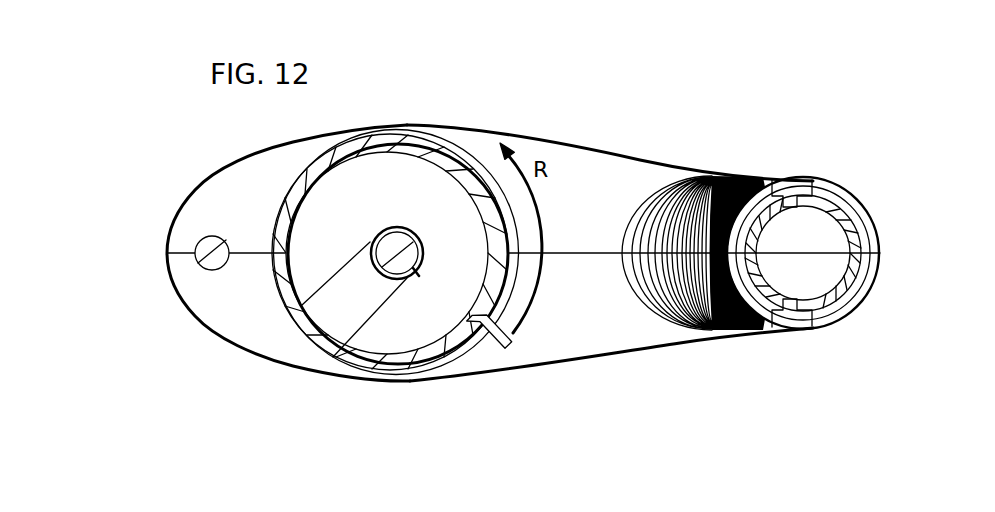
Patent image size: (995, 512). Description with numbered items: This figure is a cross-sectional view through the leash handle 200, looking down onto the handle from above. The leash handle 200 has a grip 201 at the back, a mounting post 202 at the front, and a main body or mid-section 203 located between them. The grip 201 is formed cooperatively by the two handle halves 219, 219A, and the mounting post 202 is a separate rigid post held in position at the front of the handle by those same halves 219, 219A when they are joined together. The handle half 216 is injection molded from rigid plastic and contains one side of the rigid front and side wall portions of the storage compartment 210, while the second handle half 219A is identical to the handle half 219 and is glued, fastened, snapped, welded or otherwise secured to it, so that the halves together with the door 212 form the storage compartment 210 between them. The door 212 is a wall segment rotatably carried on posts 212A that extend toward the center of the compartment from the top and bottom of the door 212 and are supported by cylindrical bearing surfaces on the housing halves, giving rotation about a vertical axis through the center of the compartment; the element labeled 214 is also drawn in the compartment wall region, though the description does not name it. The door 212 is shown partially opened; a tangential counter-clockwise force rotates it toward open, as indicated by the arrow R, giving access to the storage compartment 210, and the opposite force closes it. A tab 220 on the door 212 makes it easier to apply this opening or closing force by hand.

The leash handle 200 is at (592, 143).
The grip 201 is at (830, 183).
The mounting post 202 is at (202, 237).
The main body or mid-section 203 is at (374, 122).
The storage compartment 210 is at (397, 182).
The door 212 is at (497, 262).
The posts 212A is at (415, 272).
The cam band 214 is at (307, 187).
The handle half 216 is at (300, 328).
The handle half 219 is at (650, 330).
The second handle half 219A is at (625, 175).
The tab 220 is at (493, 350).